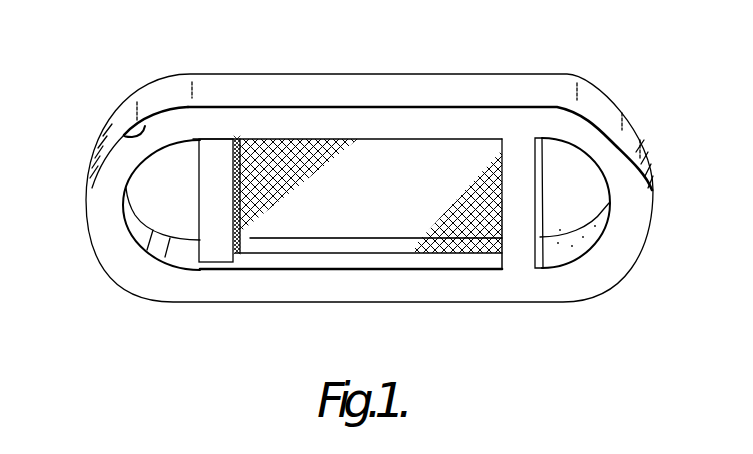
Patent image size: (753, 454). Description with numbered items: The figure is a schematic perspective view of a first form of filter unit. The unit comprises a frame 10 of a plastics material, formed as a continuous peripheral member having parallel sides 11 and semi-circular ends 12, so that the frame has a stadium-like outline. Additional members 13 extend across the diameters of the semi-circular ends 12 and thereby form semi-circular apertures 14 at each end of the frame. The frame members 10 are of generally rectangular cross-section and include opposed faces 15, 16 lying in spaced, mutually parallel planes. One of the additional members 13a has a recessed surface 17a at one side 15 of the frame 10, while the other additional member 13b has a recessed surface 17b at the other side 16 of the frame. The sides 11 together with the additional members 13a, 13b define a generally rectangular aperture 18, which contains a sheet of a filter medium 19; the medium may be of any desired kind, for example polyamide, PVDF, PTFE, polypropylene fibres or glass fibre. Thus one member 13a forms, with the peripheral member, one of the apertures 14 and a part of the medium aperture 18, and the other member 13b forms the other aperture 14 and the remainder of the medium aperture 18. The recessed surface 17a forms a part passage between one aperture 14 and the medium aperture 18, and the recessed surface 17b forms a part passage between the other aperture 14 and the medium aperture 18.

The frame 10 is at (355, 70).
The parallel sides 11 is at (430, 115).
The semi-circular ends 12 is at (108, 178).
The additional members 13 is at (200, 187).
The additional member 13a is at (227, 220).
The additional member 13b is at (515, 250).
The semi-circular apertures 14 is at (180, 223).
The face 15 is at (117, 134).
The face 16 is at (587, 83).
The recessed surface 17a is at (217, 255).
The recessed surface 17b is at (540, 218).
The rectangular aperture 18 is at (297, 140).
The filter medium 19 is at (413, 226).